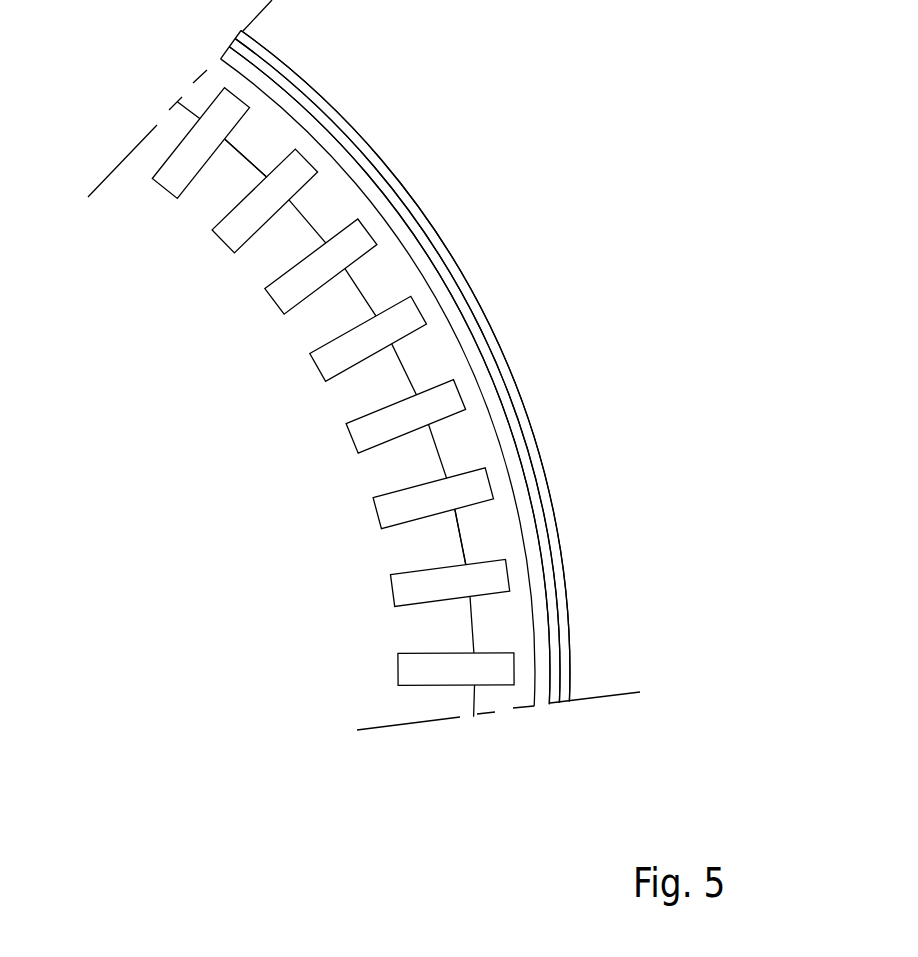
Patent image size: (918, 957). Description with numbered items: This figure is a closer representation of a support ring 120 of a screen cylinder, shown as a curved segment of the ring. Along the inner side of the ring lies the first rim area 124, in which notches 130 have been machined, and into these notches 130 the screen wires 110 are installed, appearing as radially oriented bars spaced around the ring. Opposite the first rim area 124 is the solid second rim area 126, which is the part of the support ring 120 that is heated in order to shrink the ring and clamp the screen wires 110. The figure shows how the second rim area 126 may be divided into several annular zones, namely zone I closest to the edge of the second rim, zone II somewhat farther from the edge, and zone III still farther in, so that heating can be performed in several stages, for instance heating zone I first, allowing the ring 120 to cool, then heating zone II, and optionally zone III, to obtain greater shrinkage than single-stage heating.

The screen wire 110 is at (295, 281).
The support ring 120 is at (493, 528).
The first rim area 124 is at (468, 623).
The second rim area 126 is at (569, 622).
The notch 130 is at (265, 177).
The zone I is at (403, 190).
The zone II is at (458, 293).
The zone III is at (490, 393).